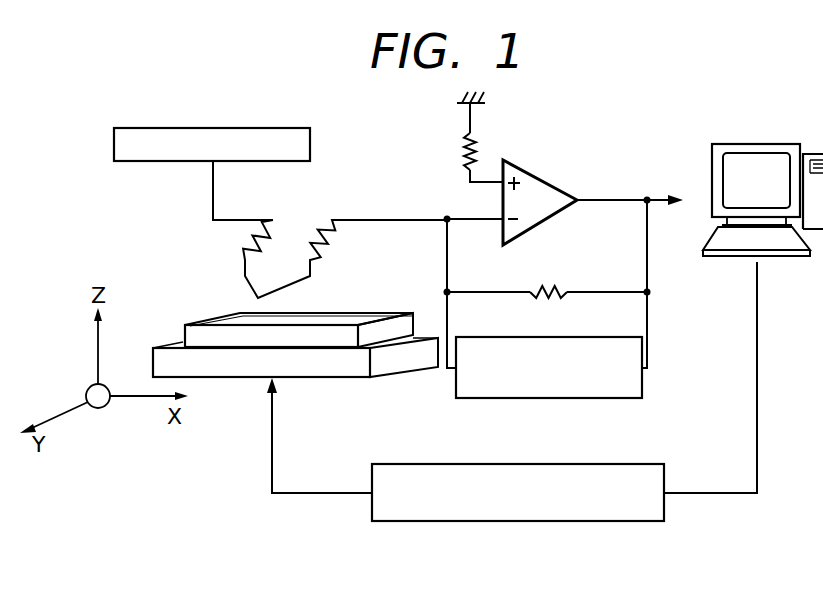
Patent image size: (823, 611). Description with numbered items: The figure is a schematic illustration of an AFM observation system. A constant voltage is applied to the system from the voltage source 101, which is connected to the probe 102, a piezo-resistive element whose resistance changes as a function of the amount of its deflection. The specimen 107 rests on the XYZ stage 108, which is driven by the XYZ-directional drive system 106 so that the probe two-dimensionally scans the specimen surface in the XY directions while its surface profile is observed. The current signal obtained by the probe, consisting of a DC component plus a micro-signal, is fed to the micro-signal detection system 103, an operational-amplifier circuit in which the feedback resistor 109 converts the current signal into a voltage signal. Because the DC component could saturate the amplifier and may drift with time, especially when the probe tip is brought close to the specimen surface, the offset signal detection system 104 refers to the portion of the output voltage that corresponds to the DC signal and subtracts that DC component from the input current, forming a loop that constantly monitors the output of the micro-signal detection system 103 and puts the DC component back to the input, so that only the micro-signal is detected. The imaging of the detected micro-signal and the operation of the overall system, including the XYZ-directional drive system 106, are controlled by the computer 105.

The voltage source 101 is at (282, 128).
The probe 102 is at (274, 236).
The micro-signal detection system 103 is at (557, 190).
The offset signal detection system 104 is at (601, 400).
The computer 105 is at (701, 243).
The XYZ-directional drive system 106 is at (556, 522).
The specimen 107 is at (364, 313).
The XYZ stage 108 is at (311, 378).
The feedback resistor Rfb 109 is at (560, 288).